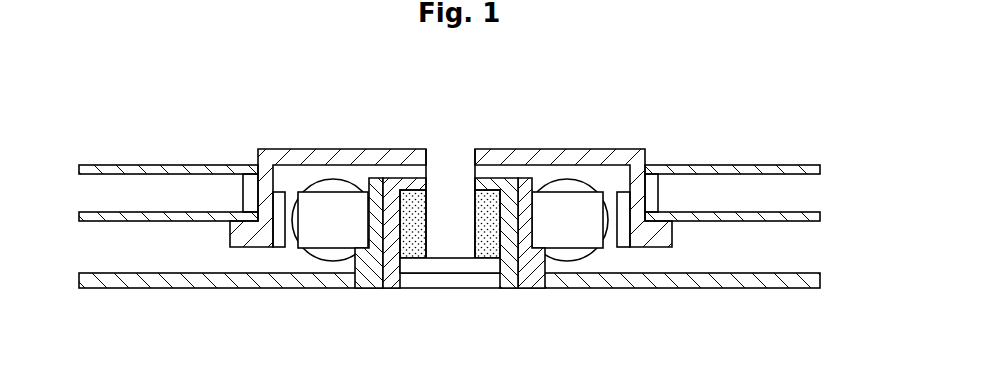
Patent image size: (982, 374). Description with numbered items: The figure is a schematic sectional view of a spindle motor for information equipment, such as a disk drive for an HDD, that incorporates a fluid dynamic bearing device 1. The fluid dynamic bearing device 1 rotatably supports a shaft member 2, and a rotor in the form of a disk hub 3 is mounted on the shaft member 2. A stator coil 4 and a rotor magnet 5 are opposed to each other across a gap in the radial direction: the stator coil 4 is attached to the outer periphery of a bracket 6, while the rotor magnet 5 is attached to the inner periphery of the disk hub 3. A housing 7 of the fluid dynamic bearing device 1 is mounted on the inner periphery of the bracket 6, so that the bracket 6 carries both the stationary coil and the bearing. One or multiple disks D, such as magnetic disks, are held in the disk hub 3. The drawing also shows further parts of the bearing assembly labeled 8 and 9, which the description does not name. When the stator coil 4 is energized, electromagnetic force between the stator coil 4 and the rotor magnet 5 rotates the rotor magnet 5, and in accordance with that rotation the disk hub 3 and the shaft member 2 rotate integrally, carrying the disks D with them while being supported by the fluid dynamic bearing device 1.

The fluid dynamic bearing device 1 is at (506, 178).
The shaft member 2 is at (458, 146).
The rotor (disk hub) 3 is at (626, 160).
The stator coil 4 is at (598, 249).
The rotor magnet 5 is at (621, 249).
The bracket 6 is at (533, 274).
The housing 7 is at (388, 178).
The right clamp member 8 is at (502, 178).
The elastic member 9 is at (407, 178).
The disk D is at (752, 164).